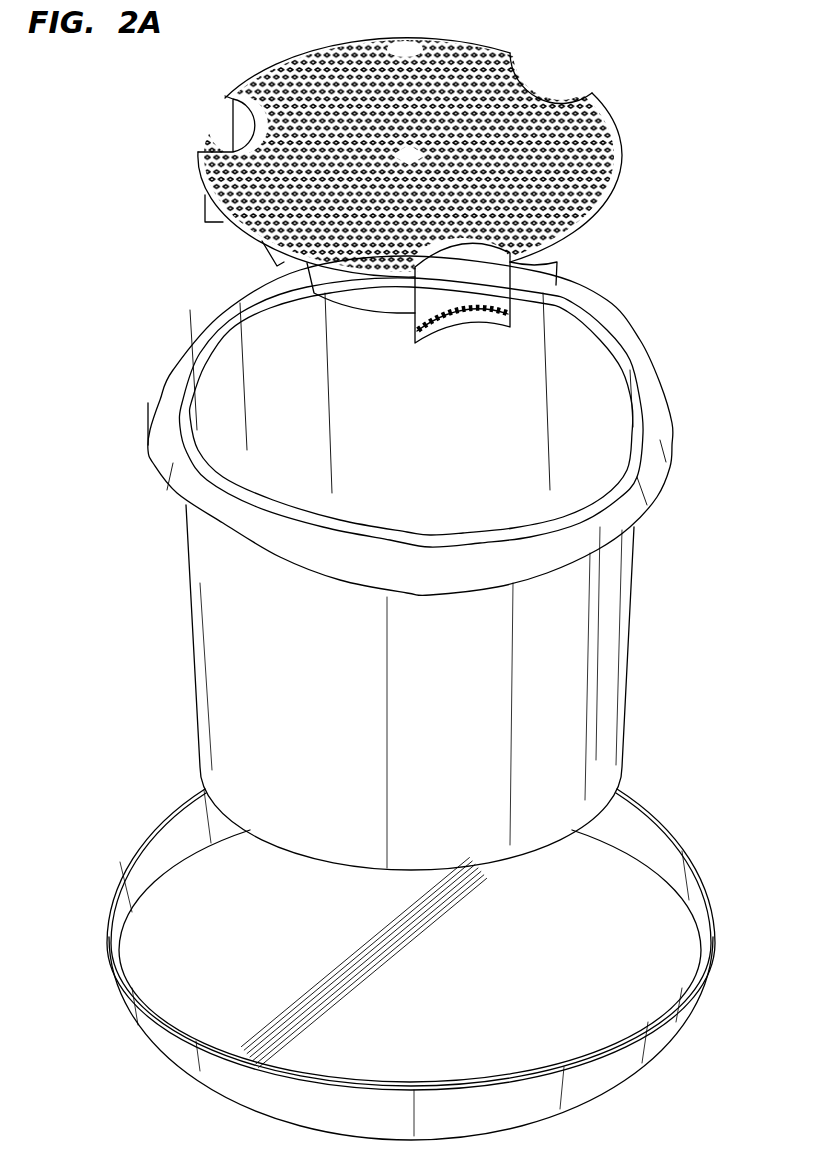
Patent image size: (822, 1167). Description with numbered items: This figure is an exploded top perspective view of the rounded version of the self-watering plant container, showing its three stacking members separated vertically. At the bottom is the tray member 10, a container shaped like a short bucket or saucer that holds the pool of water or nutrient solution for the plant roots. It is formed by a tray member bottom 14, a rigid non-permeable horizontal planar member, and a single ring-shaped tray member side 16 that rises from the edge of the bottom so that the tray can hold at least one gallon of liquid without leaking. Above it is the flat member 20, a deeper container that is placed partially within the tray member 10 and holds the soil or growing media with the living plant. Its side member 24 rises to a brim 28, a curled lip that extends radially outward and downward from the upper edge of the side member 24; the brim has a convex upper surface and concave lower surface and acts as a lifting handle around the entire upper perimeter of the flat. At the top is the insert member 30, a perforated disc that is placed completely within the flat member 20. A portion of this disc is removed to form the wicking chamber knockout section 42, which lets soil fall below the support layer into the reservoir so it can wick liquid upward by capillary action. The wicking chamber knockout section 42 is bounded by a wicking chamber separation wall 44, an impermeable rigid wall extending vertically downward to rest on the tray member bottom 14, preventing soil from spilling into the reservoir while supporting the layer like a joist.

The tray member 10 is at (732, 1029).
The tray member bottom 14 is at (190, 988).
The tray member side 16 is at (245, 1087).
The flat member 20 is at (700, 586).
The side member 24 is at (608, 703).
The brim 28 is at (667, 416).
The insert member 30 is at (703, 177).
The wicking chamber knockout section 42 is at (533, 94).
The wicking chamber separation wall 44 is at (487, 288).